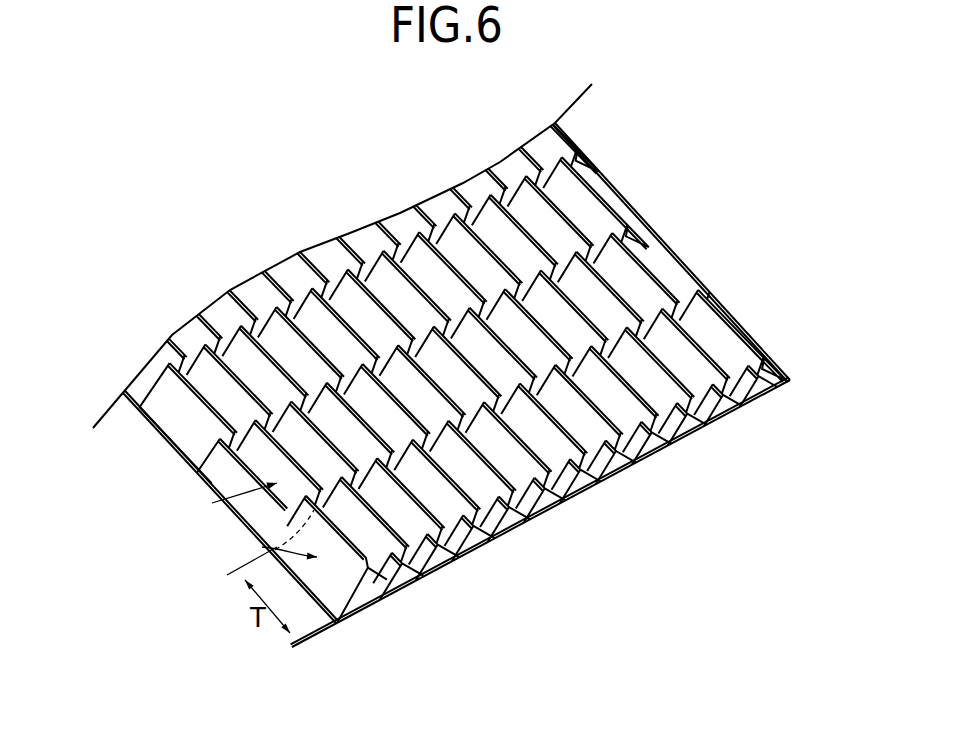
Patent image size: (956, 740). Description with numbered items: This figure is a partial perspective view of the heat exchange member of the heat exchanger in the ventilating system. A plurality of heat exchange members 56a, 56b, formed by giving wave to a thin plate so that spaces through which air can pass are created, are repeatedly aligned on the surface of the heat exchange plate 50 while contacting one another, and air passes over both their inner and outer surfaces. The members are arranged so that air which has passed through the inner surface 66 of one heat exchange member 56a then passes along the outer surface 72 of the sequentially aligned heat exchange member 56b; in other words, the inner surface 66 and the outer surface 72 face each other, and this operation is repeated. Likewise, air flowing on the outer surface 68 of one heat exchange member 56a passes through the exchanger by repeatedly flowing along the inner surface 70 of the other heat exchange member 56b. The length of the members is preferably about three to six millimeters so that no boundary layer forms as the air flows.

The heat exchange plate 50 is at (172, 455).
The heat exchange member 56a is at (262, 547).
The heat exchange member 56b is at (212, 503).
The inner surface 66 is at (363, 590).
The outer surface 68 is at (367, 567).
The inner surface 70 is at (377, 432).
The outer surface 72 is at (497, 527).